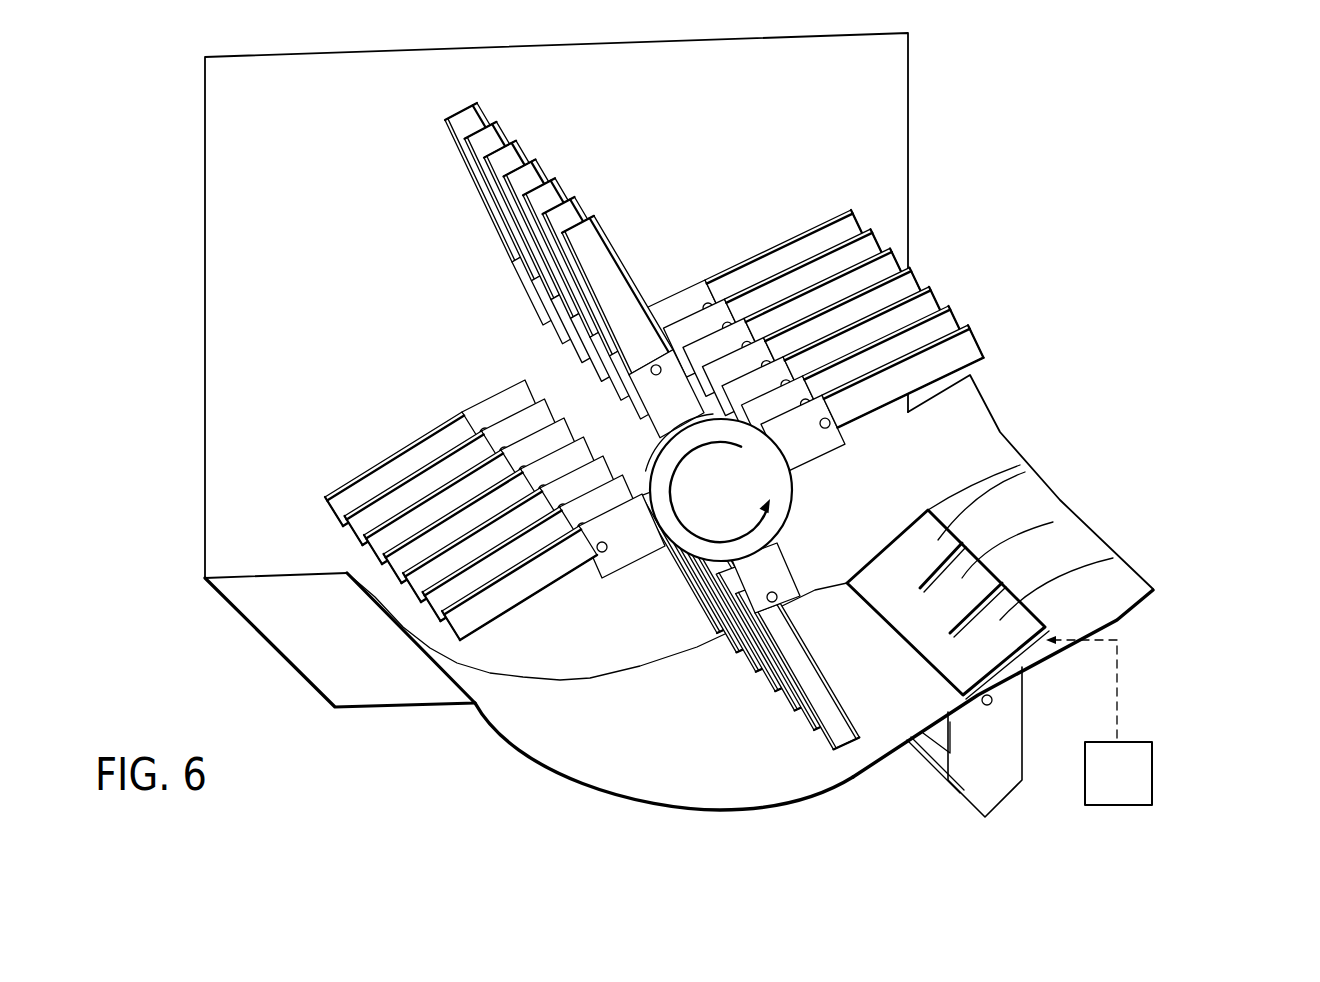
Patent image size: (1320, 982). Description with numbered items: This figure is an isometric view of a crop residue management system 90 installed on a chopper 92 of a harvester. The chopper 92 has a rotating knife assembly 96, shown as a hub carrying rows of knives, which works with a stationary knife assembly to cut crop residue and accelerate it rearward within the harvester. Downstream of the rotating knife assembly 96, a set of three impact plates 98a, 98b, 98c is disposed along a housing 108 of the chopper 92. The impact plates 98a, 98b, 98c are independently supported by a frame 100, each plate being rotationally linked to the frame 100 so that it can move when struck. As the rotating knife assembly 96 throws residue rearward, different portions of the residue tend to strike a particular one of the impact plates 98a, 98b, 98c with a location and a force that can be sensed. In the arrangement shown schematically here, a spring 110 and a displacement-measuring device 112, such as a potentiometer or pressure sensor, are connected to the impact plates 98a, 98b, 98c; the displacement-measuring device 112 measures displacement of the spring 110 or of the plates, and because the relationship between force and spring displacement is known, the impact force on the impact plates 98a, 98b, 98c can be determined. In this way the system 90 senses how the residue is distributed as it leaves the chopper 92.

The crop residue management system 90 is at (1203, 802).
The chopper 92 is at (196, 212).
The rotating knife assembly 96 is at (441, 254).
The impact plate 98a is at (1113, 558).
The impact plate 98b is at (1053, 522).
The impact plate 98c is at (1020, 465).
The frame 100 is at (958, 797).
The housing 108 is at (1120, 621).
The spring 110 is at (1153, 589).
The displacement-measuring device 112 is at (1132, 742).